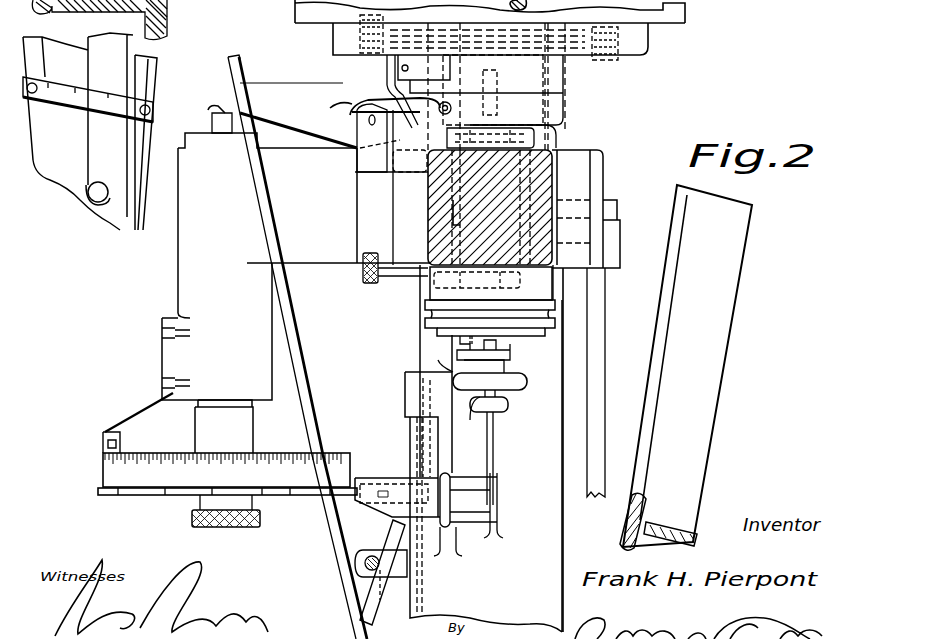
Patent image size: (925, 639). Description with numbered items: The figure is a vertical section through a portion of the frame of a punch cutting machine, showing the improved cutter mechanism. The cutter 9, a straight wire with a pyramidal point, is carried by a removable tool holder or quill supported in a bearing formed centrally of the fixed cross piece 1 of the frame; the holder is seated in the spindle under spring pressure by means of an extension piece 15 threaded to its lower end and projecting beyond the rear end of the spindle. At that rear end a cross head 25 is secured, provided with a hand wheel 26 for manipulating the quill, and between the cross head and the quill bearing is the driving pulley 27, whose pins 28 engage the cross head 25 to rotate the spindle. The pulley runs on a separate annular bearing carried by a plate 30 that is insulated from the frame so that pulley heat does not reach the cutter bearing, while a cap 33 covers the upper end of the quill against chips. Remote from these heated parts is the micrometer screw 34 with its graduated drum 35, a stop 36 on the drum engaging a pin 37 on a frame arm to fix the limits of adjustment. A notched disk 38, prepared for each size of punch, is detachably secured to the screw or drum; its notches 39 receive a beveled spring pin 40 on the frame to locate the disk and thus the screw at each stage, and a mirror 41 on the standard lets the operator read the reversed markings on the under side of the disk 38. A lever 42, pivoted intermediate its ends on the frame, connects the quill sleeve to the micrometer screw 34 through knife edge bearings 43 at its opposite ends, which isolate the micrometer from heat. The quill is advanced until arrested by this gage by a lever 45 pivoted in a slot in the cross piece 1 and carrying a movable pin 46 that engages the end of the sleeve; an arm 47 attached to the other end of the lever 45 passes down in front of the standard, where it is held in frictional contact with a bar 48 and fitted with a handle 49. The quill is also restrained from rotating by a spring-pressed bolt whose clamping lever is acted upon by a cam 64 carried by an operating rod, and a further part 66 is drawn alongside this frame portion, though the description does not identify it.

The fixed cross piece 1 is at (553, 153).
The cutter 9 is at (440, 103).
The extension piece 15 is at (495, 398).
The cross head 25 is at (500, 351).
The hand wheel 26 is at (462, 383).
The driving pulley 27 is at (430, 320).
The pins 28 is at (500, 360).
The plate 30 is at (437, 292).
The cap 33 is at (556, 130).
The micrometer screw 34 is at (225, 123).
The graduated drum 35 is at (280, 450).
The stop 36 is at (122, 443).
The pin 37 is at (553, 262).
The notched disk 38 is at (302, 490).
The notches 39 is at (163, 490).
The spring pin 40 is at (355, 503).
The mirror 41 is at (367, 590).
The lever 42 is at (334, 174).
The knife edge bearings 43 is at (213, 108).
The lever 45 is at (445, 443).
The pin 46 is at (405, 274).
The arm 47 is at (358, 20).
The bar 48 is at (68, 102).
The handle 49 is at (92, 193).
The cam 64 is at (601, 209).
The strip 66 is at (608, 308).